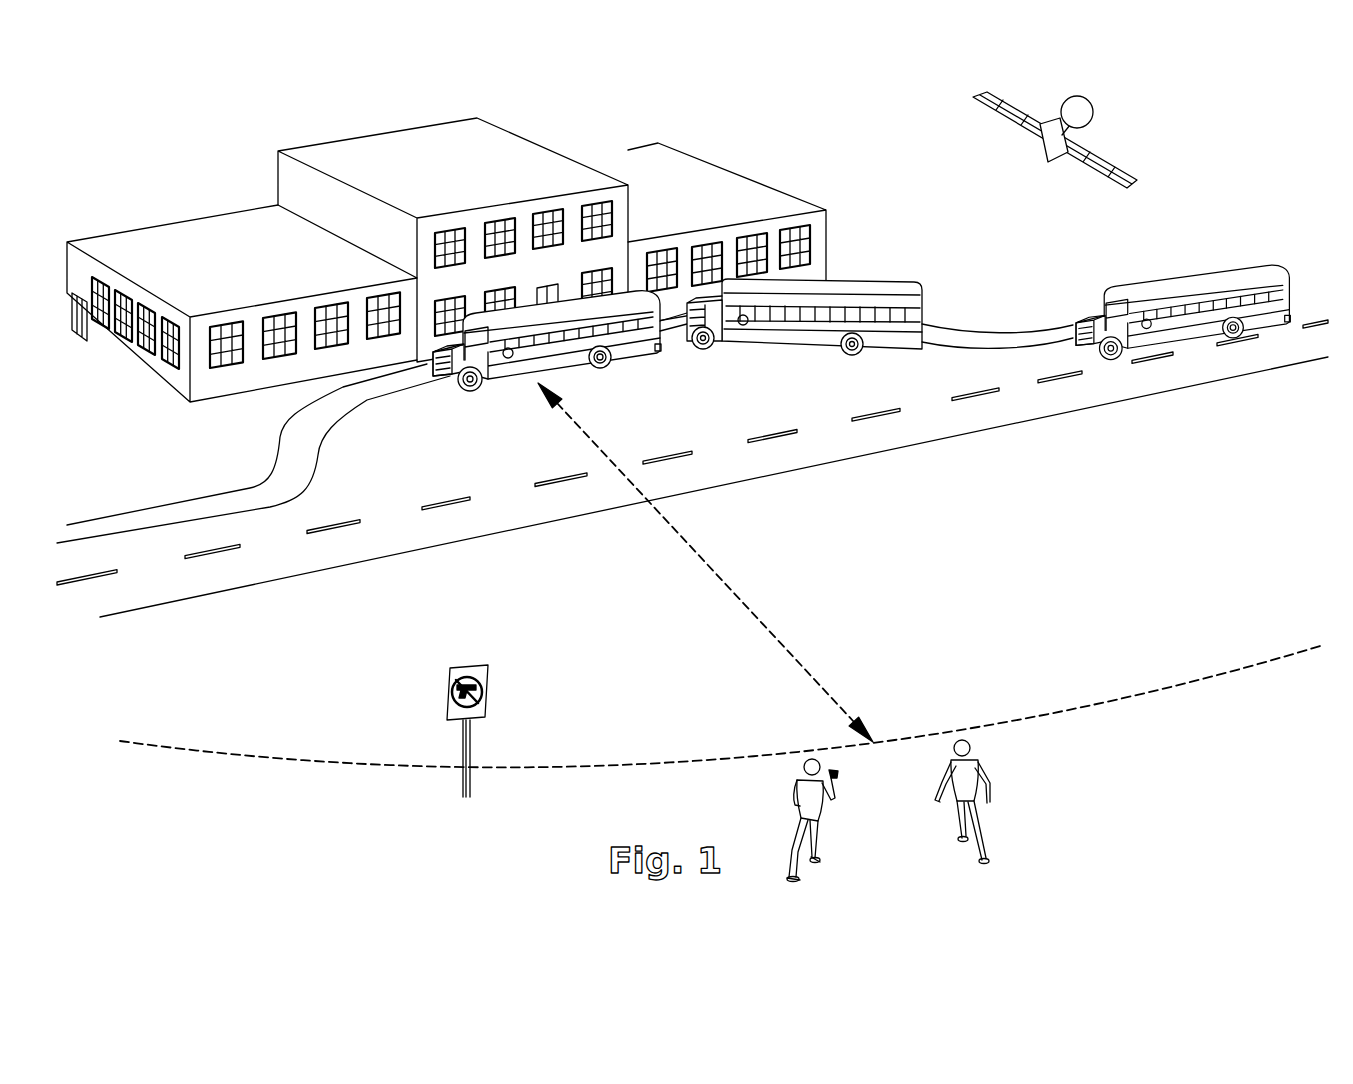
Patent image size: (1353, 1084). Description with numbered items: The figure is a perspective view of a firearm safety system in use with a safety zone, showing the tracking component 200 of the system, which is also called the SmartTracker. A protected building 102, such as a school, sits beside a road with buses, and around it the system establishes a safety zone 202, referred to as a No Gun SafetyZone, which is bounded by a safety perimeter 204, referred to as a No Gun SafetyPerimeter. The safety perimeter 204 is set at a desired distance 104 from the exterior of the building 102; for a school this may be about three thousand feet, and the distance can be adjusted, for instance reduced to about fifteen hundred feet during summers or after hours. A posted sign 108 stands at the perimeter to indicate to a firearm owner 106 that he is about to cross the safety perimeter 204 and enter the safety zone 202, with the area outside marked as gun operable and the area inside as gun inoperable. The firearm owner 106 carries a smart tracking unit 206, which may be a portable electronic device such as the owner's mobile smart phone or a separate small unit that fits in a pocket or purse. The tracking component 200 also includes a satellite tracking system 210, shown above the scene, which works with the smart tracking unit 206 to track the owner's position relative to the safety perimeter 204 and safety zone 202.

The building 102 is at (509, 150).
The distance 104 is at (763, 604).
The firearm owner 106 is at (821, 880).
The posted sign 108 is at (505, 671).
The tracking component 200 is at (1233, 160).
The safety zone 202 is at (1010, 549).
The safety perimeter 204 is at (297, 775).
The smart tracking unit 206 is at (851, 771).
The satellite tracking system 210 is at (1172, 135).